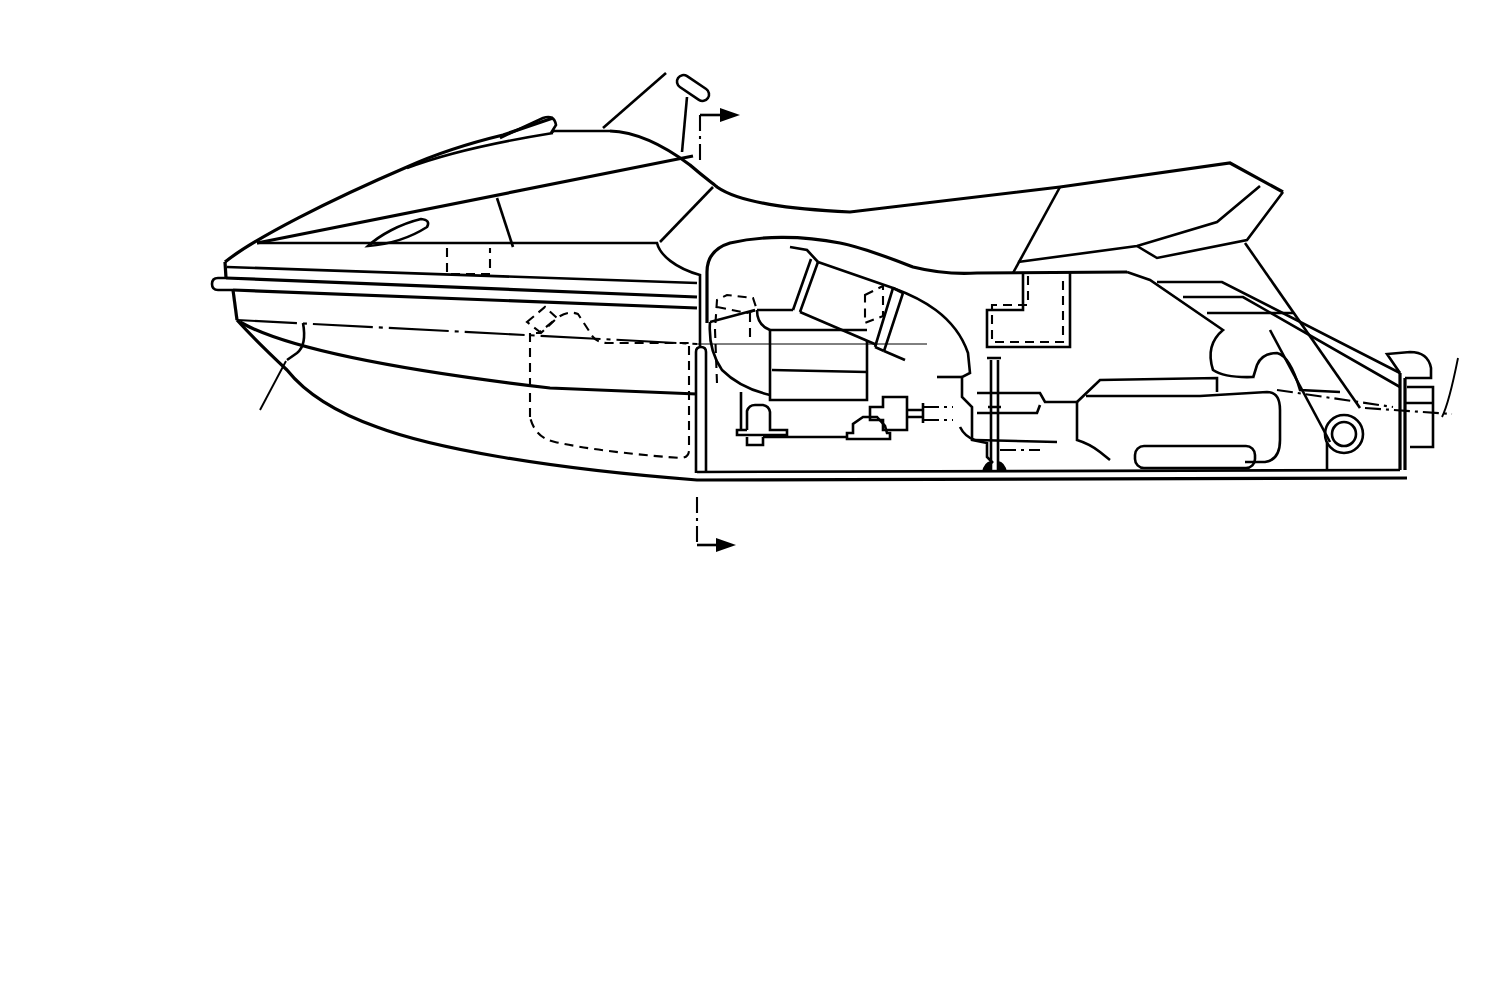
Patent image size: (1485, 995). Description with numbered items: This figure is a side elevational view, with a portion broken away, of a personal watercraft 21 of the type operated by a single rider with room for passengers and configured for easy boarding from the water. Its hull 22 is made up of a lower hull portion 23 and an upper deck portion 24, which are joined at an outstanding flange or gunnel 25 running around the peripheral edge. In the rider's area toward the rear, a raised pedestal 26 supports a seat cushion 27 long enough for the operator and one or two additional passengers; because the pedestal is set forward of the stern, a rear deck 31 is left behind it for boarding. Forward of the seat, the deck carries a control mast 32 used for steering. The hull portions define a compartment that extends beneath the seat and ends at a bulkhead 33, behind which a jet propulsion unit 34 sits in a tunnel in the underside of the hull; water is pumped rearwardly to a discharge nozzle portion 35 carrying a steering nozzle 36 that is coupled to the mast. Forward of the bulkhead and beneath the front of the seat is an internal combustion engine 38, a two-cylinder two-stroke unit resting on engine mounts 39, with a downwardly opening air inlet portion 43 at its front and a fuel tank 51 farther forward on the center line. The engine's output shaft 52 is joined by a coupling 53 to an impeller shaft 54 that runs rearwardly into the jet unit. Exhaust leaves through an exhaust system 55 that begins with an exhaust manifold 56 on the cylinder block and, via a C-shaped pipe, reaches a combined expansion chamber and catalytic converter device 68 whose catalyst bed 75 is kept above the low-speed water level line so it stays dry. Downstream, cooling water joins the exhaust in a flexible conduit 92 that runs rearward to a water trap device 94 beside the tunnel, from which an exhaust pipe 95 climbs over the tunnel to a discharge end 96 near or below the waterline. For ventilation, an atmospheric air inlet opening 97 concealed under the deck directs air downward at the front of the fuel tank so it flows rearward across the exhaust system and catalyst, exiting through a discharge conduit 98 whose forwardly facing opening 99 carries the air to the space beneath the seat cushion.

The personal watercraft 21 is at (1080, 130).
The hull 22 is at (221, 257).
The lower hull portion 23 is at (400, 403).
The upper deck portion 24 is at (350, 195).
The gunnel 25 is at (213, 282).
The raised pedestal 26 is at (1243, 262).
The seat cushion 27 is at (967, 210).
The rear deck 31 is at (1392, 350).
The control mast 32 is at (700, 82).
The bulkhead 33 is at (1000, 383).
The jet propulsion unit 34 is at (1138, 390).
The discharge nozzle portion 35 is at (1383, 450).
The steering nozzle 36 is at (1410, 448).
The internal combustion engine 38 is at (835, 445).
The engine mounts 39 is at (752, 446).
The air inlet portion 43 is at (717, 385).
The fuel tank 51 is at (525, 428).
The output shaft 52 is at (883, 397).
The coupling 53 is at (928, 375).
The impeller shaft 54 is at (923, 427).
The exhaust system 55 is at (787, 264).
The exhaust manifold 56 is at (797, 392).
The combined expansion chamber and catalytic converter device 68 is at (834, 271).
The catalyst bed 75 is at (862, 303).
The flexible conduit 92 is at (1060, 437).
The water trap device 94 is at (1190, 445).
The exhaust pipe 95 is at (1245, 355).
The discharge end 96 is at (1340, 438).
The atmospheric air inlet opening 97 is at (500, 264).
The discharge conduit 98 is at (1075, 297).
The forwardly facing opening 99 is at (987, 318).